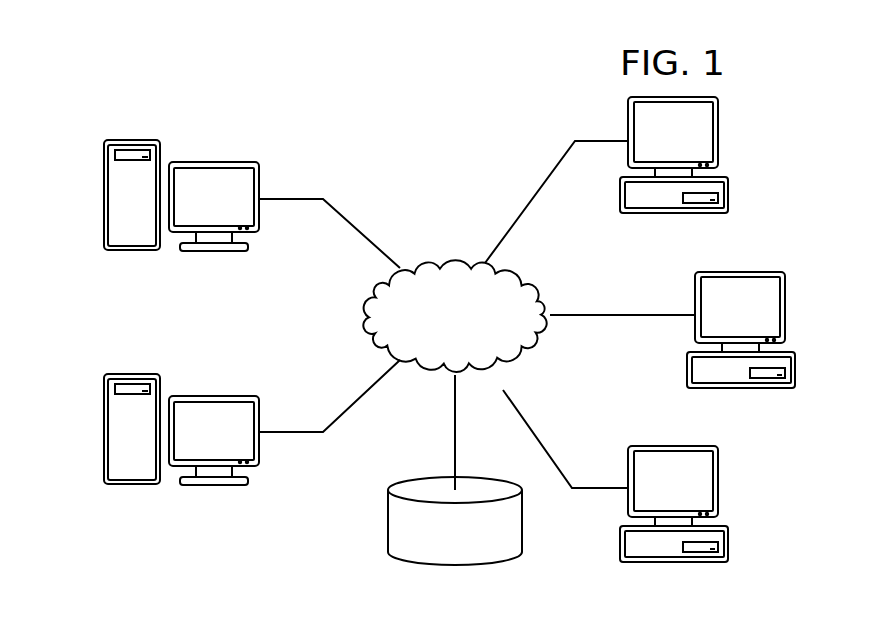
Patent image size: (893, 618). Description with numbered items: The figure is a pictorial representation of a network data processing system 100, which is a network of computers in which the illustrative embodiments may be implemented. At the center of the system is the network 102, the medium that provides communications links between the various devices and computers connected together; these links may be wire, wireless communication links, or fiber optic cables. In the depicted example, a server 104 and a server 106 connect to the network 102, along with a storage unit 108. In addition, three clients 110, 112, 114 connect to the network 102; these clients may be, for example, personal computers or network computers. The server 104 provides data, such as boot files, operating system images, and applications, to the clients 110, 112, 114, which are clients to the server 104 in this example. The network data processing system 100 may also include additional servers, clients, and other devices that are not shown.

The network data processing system 100 is at (332, 112).
The network 102 is at (447, 257).
The server 104 is at (104, 197).
The server 106 is at (103, 428).
The storage unit 108 is at (388, 522).
The client 110 is at (728, 195).
The client 112 is at (795, 372).
The client 114 is at (728, 543).